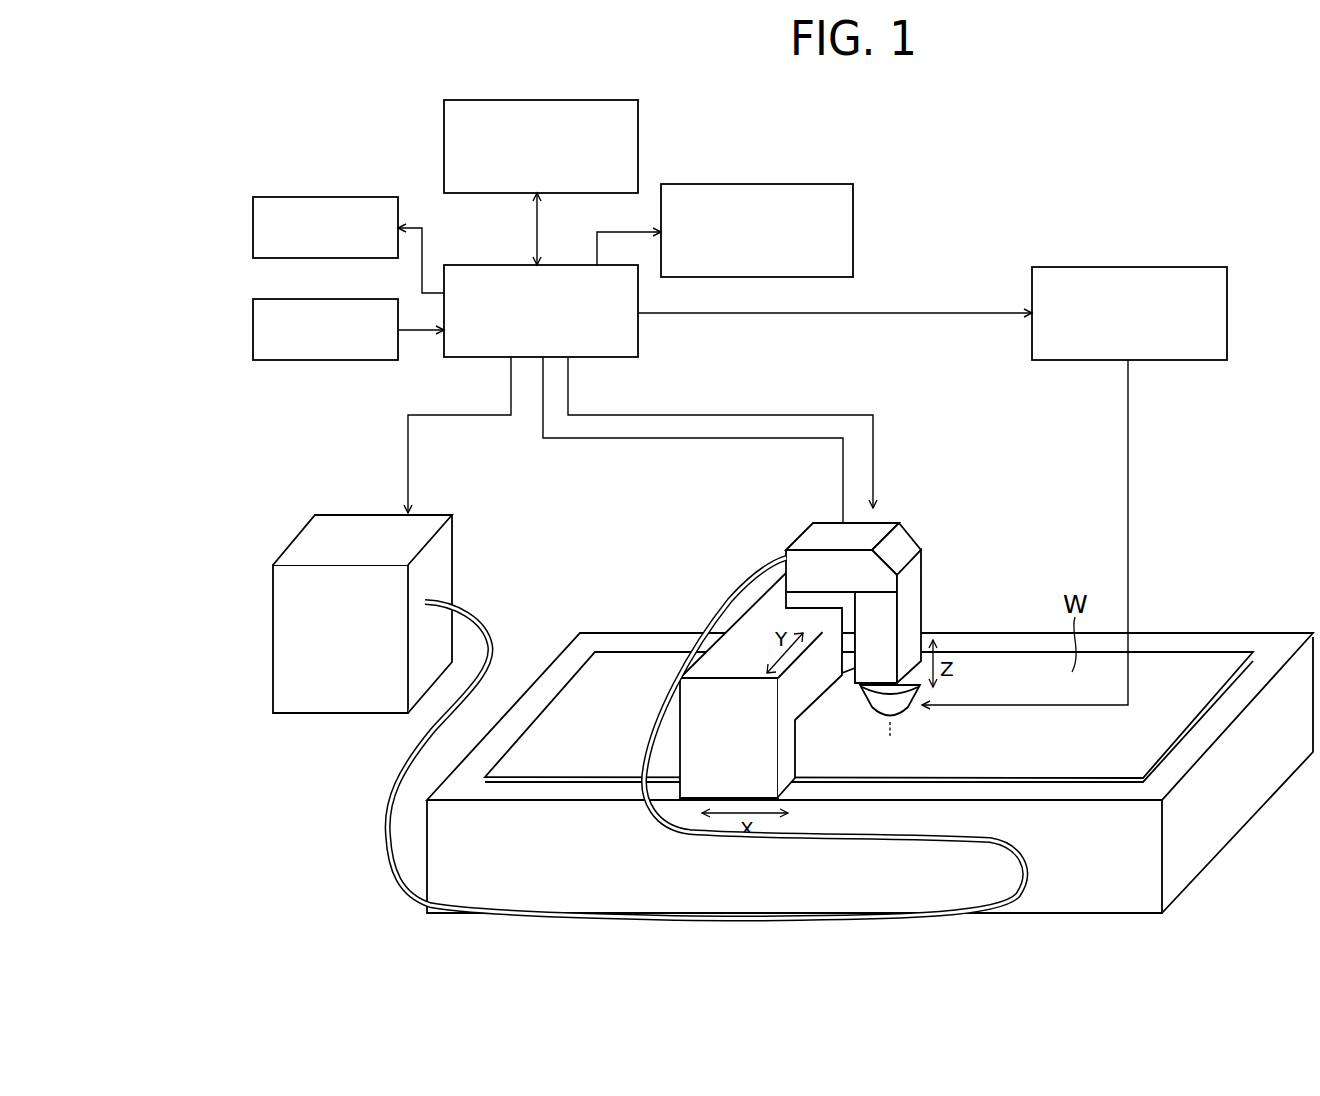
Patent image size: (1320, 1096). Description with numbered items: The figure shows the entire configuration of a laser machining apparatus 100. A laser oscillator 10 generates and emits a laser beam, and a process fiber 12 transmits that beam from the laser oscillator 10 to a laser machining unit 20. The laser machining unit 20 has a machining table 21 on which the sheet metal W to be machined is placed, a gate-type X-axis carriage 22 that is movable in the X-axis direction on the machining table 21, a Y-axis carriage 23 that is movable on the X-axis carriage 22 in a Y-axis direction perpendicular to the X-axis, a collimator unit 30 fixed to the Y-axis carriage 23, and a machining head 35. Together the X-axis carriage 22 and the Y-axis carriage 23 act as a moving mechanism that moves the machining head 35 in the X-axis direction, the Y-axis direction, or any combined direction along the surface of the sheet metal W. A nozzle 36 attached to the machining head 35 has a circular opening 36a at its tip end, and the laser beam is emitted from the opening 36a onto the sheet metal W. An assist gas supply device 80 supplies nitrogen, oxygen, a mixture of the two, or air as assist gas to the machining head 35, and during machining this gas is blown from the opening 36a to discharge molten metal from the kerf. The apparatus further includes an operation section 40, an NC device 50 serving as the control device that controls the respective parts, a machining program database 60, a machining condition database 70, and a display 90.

The laser machining apparatus 100 is at (963, 177).
The laser oscillator 10 is at (371, 525).
The process fiber 12 is at (386, 856).
The laser machining unit 20 is at (870, 734).
The machining table 21 is at (1160, 645).
The X-axis carriage 22 is at (869, 641).
The Y-axis carriage 23 is at (844, 676).
The collimator unit 30 is at (786, 547).
The machining head 35 is at (936, 655).
The nozzle 36 is at (895, 703).
The opening 36a is at (894, 721).
The operation section 40 is at (333, 360).
The NC device 50 is at (487, 265).
The machining program database 60 is at (545, 100).
The machining condition database 70 is at (759, 184).
The assist gas supply device 80 is at (1129, 267).
The display 90 is at (333, 197).